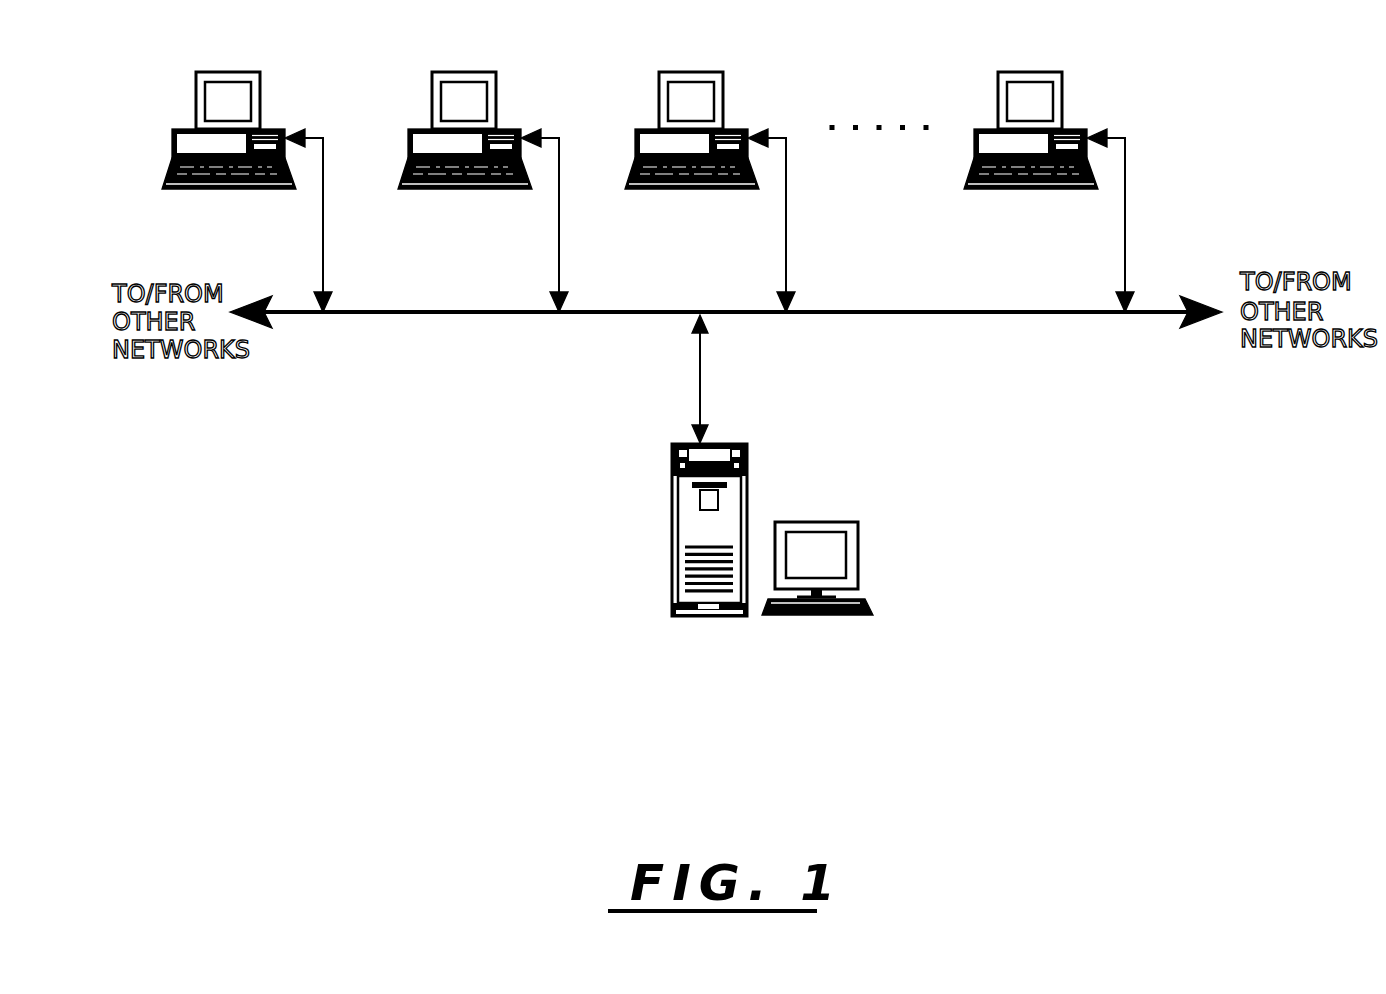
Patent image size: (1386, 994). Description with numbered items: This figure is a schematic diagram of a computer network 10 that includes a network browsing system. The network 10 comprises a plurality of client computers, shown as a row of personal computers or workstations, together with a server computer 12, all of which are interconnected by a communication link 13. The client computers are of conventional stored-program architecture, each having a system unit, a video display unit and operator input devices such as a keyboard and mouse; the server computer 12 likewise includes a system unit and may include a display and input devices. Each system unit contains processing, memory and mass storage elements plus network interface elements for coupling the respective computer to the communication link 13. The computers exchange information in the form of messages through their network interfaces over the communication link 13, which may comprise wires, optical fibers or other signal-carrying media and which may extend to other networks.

The computer network 10 is at (251, 589).
The server computer 12 is at (672, 564).
The communication link 13 is at (966, 308).